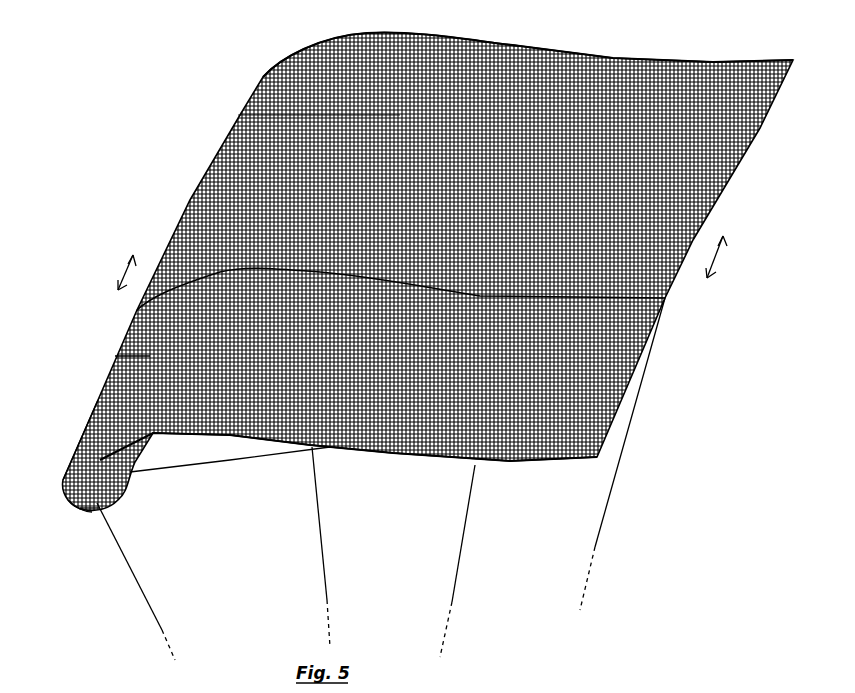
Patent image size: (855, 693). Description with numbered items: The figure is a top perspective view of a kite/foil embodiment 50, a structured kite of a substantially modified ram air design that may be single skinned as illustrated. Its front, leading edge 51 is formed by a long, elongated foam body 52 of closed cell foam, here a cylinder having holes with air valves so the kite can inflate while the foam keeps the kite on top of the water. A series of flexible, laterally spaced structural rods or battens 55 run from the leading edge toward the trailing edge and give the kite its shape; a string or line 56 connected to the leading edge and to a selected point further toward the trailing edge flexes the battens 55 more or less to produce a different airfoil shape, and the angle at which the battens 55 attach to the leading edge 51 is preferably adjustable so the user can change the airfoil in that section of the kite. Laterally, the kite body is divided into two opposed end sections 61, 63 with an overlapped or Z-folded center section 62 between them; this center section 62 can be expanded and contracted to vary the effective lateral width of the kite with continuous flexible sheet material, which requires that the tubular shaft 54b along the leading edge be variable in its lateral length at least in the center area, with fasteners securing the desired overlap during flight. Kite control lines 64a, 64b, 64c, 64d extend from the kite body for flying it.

The kite/foil embodiment 50 is at (256, 65).
The leading edge 51 is at (67, 482).
The foam body 52 is at (72, 502).
The tubular shaft 54b is at (87, 507).
The flexible batten 55 is at (617, 58).
The string/line 56 is at (230, 462).
The opposed end section 61 is at (115, 356).
The center section 62 is at (167, 243).
The opposed end section 63 is at (238, 115).
The kite control line 64a is at (162, 630).
The kite control line 64b is at (327, 600).
The kite control line 64c is at (452, 602).
The kite control line 64d is at (595, 547).